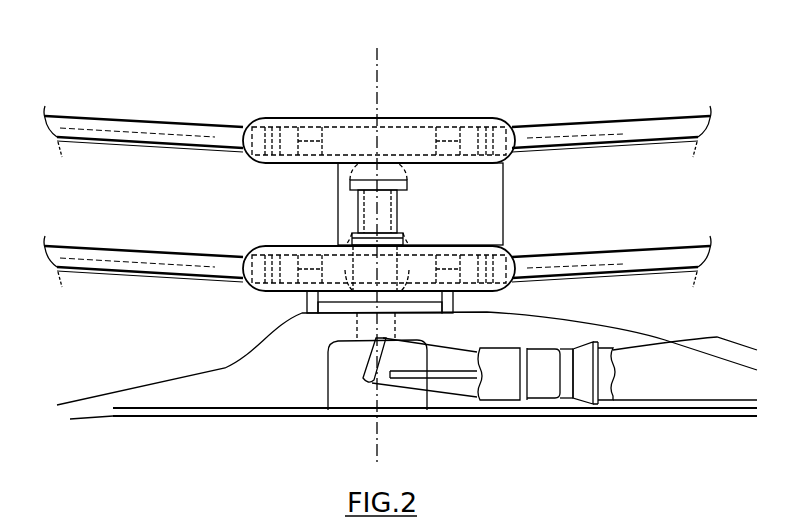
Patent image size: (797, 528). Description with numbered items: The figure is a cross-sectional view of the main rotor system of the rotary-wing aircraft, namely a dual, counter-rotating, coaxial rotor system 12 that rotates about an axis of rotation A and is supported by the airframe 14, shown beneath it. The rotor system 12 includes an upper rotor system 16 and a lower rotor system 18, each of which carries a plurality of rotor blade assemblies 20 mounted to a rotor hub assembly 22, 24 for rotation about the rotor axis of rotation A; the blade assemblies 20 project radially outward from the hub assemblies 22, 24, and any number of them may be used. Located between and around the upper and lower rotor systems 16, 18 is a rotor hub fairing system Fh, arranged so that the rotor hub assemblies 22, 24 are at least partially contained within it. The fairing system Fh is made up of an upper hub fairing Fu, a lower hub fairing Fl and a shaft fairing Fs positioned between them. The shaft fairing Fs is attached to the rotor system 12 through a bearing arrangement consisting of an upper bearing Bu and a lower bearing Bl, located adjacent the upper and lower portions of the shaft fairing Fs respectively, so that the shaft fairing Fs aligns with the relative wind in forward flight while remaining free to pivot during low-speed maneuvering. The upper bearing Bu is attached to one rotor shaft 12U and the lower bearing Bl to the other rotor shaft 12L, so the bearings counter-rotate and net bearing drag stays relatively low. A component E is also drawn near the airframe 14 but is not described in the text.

The dual, counter-rotating, coaxial rotor system 12 is at (243, 300).
The rotor shaft 12U is at (357, 205).
The rotor shaft 12L is at (330, 243).
The airframe 14 is at (207, 408).
The upper rotor system 16 is at (533, 113).
The lower rotor system 18 is at (515, 245).
The rotor blade assembly 20 is at (627, 133).
The rotor hub assembly 22 is at (398, 130).
The rotor hub assembly 24 is at (402, 292).
The axis of rotation A is at (378, 58).
The upper bearing Bu is at (407, 184).
The lower bearing Bl is at (403, 240).
The coupler / elbow E is at (497, 385).
The upper hub fairing Fu is at (315, 110).
The rotor hub fairing system Fh is at (252, 190).
The lower hub fairing Fl is at (277, 243).
The shaft fairing Fs is at (485, 207).